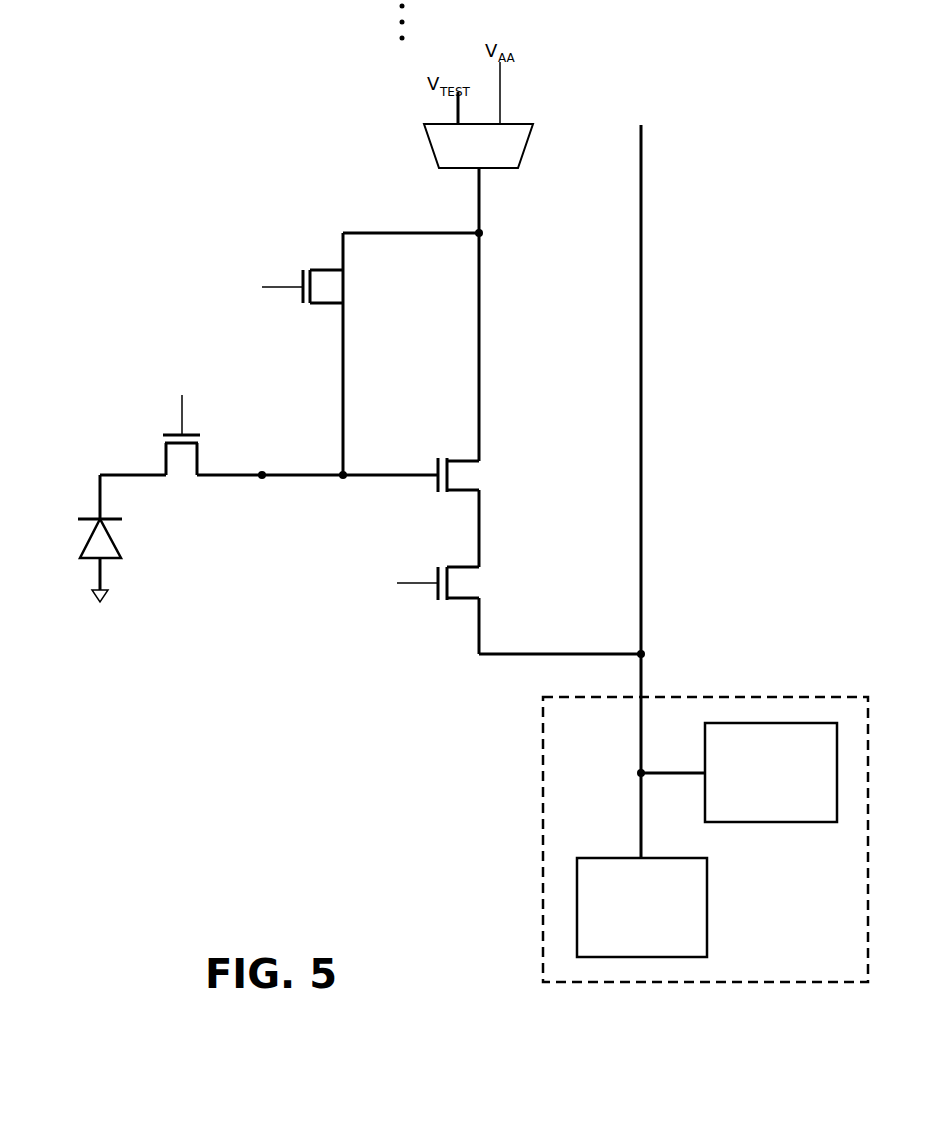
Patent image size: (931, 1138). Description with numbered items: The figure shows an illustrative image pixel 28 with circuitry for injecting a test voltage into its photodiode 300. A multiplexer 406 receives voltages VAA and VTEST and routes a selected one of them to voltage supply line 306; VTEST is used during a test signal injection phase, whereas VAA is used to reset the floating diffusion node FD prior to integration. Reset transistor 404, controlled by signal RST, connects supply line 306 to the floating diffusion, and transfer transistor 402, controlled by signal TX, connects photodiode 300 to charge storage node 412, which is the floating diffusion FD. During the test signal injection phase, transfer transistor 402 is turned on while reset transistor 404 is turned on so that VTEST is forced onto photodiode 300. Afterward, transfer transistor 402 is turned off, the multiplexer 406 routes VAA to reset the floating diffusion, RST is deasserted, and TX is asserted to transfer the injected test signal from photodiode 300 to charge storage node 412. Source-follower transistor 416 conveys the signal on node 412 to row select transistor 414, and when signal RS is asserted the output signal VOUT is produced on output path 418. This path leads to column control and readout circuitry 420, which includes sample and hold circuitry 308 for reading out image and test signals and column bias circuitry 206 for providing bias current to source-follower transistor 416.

The pixel 28 is at (188, 136).
The multiplexer 406 is at (443, 147).
The voltage supply line 306 is at (481, 200).
The reset transistor 404 is at (328, 265).
The transfer transistor 402 is at (168, 459).
The charge storage node 412 is at (262, 471).
The photodiode 300 is at (93, 540).
The source-follower transistor 416 is at (458, 463).
The row select transistor 414 is at (458, 598).
The output path 418 is at (541, 657).
The column control and readout circuitry 420 is at (543, 808).
The column bias circuitry 206 is at (787, 814).
The sample and hold circuitry 308 is at (706, 909).